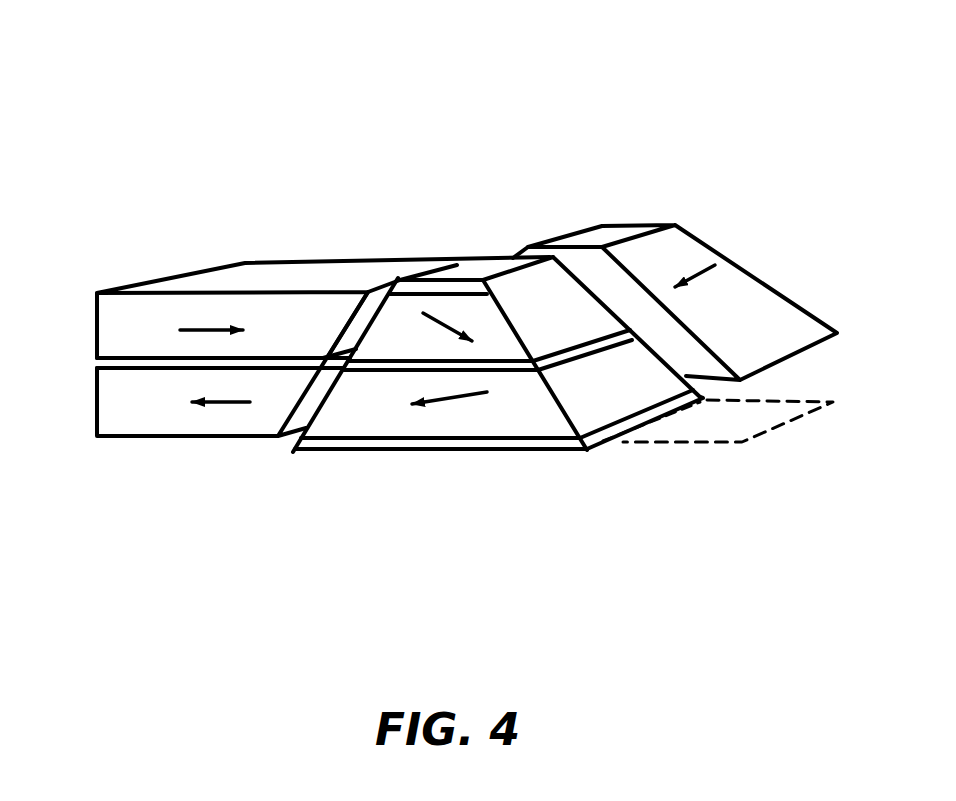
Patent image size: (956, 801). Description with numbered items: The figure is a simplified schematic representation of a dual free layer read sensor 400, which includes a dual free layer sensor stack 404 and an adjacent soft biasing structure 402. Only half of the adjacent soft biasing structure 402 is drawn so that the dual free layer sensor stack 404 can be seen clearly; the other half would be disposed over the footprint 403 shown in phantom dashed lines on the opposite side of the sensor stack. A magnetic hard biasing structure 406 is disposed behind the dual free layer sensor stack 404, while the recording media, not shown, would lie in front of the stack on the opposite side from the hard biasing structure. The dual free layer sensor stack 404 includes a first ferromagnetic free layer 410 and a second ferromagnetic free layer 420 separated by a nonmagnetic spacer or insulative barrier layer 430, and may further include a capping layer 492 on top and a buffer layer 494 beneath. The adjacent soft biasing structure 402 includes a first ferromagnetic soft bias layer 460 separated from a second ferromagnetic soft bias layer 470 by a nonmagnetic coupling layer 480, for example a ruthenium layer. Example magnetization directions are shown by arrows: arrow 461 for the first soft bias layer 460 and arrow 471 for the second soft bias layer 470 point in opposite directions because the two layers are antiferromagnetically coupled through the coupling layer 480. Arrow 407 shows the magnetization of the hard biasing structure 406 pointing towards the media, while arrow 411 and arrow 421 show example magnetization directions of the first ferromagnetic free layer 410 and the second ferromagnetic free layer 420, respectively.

The dual free layer read sensor 400 is at (292, 84).
The adjacent soft biasing structure 402 is at (125, 460).
The footprint 403 is at (687, 445).
The dual free layer sensor stack 404 is at (617, 487).
The magnetic hard biasing structure 406 is at (776, 348).
The arrow 407 is at (715, 265).
The first ferromagnetic free layer 410 is at (641, 398).
The arrow 411 is at (470, 397).
The second ferromagnetic free layer 420 is at (579, 328).
The arrow 421 is at (433, 325).
The nonmagnetic spacer or insulative barrier layer 430 is at (553, 357).
The first ferromagnetic soft bias layer 460 is at (164, 420).
The arrow 461 is at (223, 403).
The second ferromagnetic soft bias layer 470 is at (164, 345).
The arrow 471 is at (208, 330).
The nonmagnetic coupling layer 480 is at (97, 360).
The capping layer 492 is at (475, 270).
The buffer layer 494 is at (407, 447).